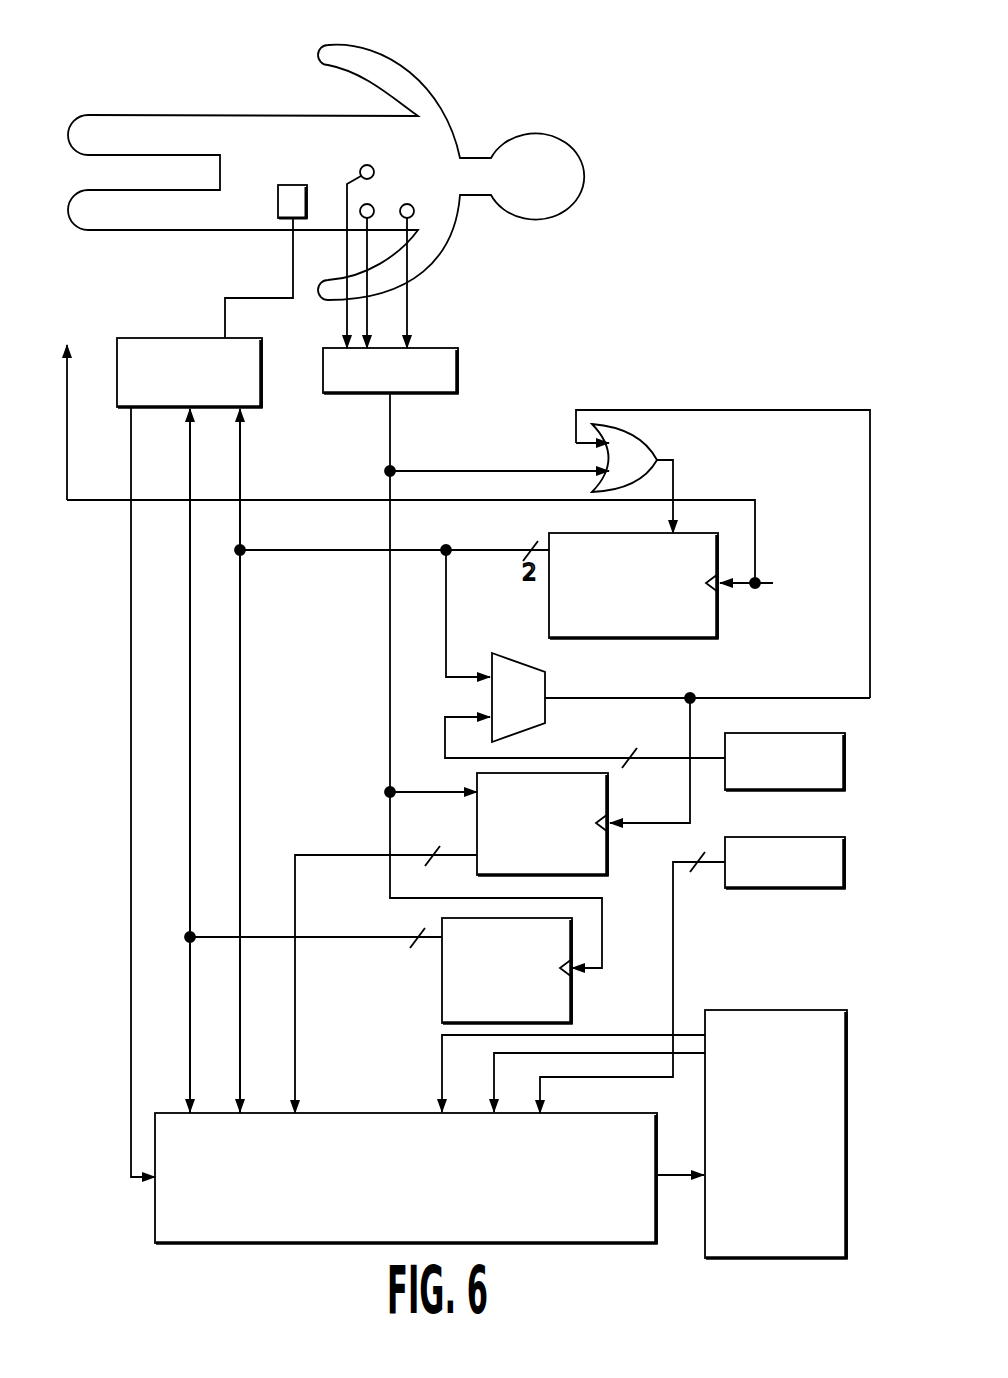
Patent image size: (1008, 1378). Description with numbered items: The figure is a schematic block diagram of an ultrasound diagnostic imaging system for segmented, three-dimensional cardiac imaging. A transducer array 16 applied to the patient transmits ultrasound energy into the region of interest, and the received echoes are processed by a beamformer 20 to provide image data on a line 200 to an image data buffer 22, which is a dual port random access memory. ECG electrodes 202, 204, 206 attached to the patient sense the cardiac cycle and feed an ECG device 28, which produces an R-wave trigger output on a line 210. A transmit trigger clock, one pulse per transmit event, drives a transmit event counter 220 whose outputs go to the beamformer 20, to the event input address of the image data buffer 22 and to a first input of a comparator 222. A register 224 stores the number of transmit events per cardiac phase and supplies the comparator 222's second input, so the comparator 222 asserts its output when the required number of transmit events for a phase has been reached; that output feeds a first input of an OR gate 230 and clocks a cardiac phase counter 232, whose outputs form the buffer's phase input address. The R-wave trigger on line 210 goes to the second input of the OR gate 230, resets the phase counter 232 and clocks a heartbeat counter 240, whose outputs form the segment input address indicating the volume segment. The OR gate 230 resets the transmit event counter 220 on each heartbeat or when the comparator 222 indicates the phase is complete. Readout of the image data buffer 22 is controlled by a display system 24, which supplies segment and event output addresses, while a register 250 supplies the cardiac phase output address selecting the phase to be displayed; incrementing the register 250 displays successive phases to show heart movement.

The transducer array 16 is at (278, 208).
The beamformer 20 is at (177, 338).
The image data buffer 22 is at (155, 1202).
The display system 24 is at (745, 1010).
The ECG device 28 is at (458, 368).
The line 200 is at (131, 575).
The ECG electrode 202 is at (361, 167).
The ECG electrode 204 is at (375, 204).
The ECG electrode 206 is at (415, 211).
The line 210 is at (385, 598).
The transmit event counter 220 is at (720, 628).
The comparator 222 is at (548, 683).
The register 224 is at (792, 790).
The OR gate 230 is at (650, 440).
The cardiac phase counter 232 is at (477, 818).
The heartbeat counter 240 is at (442, 987).
The register 250 is at (780, 888).